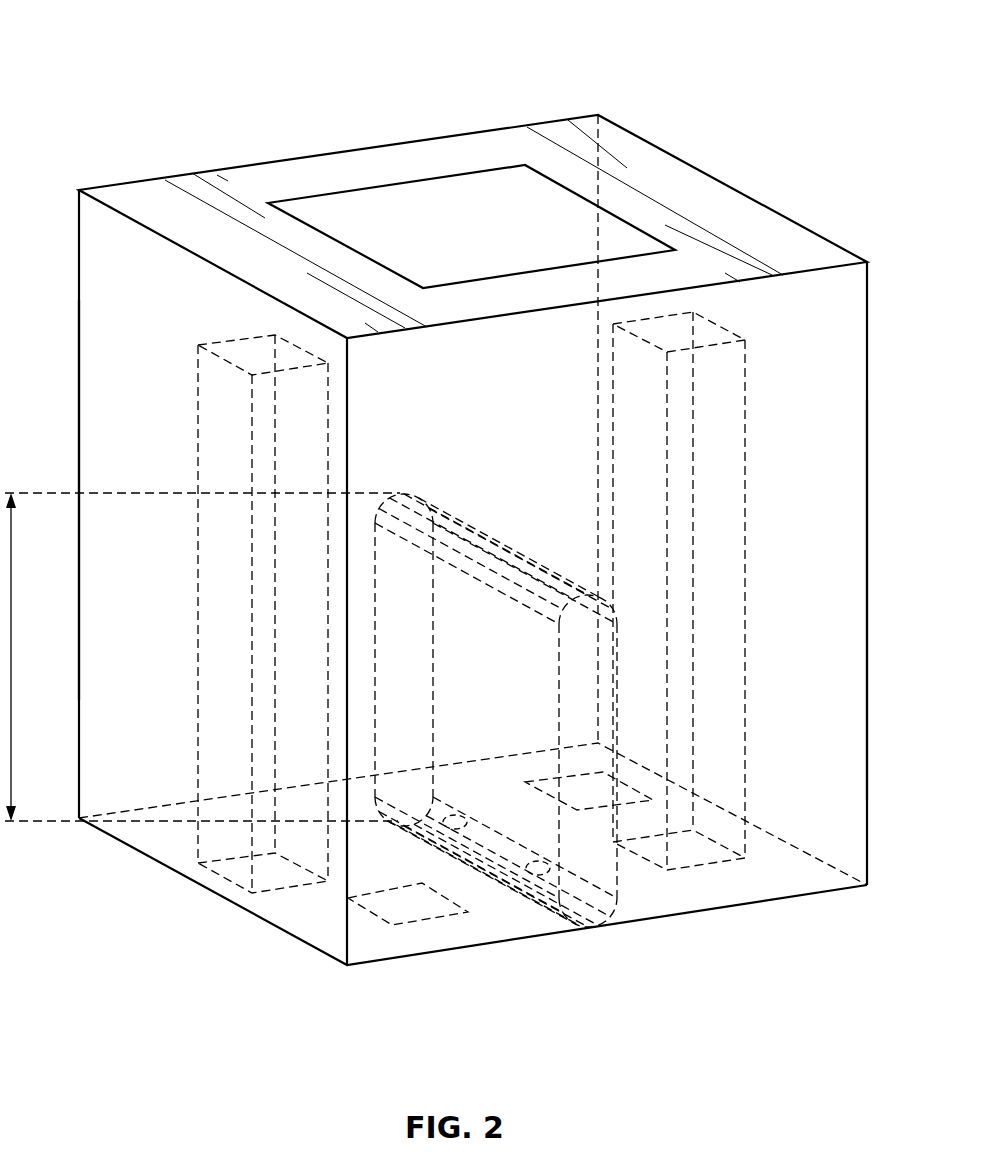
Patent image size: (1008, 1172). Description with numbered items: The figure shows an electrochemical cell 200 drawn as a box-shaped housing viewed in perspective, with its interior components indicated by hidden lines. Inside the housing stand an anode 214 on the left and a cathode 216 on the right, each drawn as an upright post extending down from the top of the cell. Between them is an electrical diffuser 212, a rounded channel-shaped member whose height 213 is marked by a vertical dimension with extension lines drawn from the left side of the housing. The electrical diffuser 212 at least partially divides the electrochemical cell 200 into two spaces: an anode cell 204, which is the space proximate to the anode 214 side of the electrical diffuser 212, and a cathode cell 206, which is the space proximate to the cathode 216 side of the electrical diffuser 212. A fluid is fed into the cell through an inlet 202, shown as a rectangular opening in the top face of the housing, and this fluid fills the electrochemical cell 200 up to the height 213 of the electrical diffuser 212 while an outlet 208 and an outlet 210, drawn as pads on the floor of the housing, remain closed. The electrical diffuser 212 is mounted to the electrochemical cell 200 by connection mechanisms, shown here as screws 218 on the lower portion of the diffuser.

The electrochemical cell 200 is at (128, 44).
The inlet 202 is at (625, 218).
The anode cell 204 is at (95, 650).
The cathode cell 206 is at (855, 652).
The outlet 208 is at (430, 920).
The outlet 210 is at (625, 785).
The electrical diffuser 212 is at (582, 923).
The height 213 is at (12, 610).
The anode 214 is at (197, 553).
The cathode 216 is at (745, 483).
The screws 218 is at (457, 814).